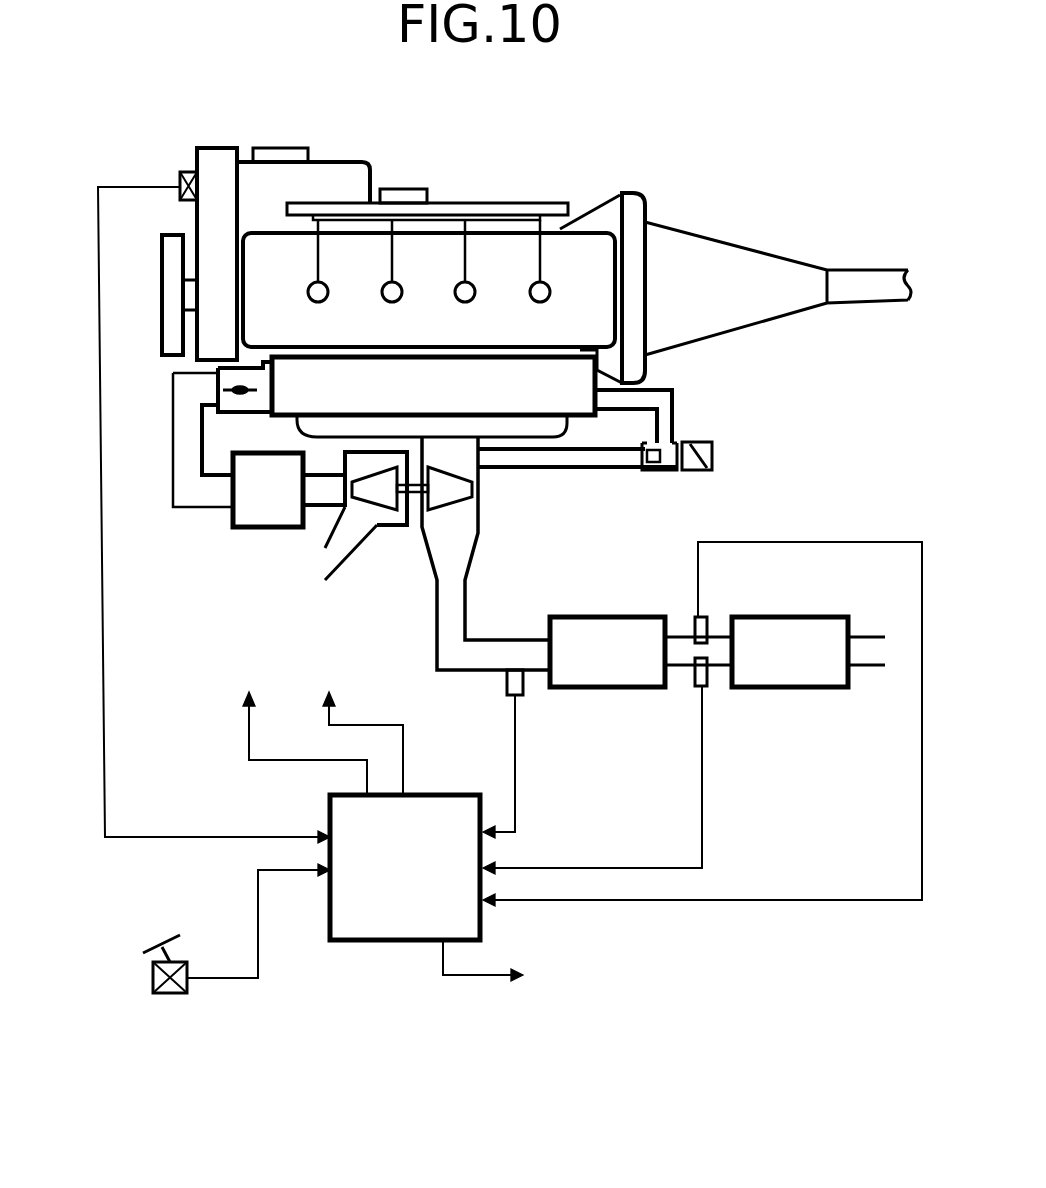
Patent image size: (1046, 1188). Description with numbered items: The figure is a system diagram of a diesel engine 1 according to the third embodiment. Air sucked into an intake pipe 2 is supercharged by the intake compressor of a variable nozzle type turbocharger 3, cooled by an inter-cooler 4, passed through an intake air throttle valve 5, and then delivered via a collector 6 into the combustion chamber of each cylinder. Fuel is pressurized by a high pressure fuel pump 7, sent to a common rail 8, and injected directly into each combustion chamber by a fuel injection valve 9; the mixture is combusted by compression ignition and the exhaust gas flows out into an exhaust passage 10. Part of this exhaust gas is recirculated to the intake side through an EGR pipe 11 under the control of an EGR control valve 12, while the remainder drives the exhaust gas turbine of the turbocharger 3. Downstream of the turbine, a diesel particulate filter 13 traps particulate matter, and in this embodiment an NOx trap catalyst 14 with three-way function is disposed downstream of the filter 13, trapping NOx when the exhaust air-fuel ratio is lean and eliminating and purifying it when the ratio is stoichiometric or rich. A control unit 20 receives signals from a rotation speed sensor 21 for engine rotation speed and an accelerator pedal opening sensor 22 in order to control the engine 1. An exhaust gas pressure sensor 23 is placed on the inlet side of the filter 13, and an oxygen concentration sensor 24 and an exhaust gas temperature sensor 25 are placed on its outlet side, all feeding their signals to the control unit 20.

The diesel engine 1 is at (587, 247).
The intake pipe 2 is at (343, 560).
The variable nozzle type turbocharger 3 is at (378, 508).
The inter-cooler 4 is at (267, 528).
The intake air throttle valve 5 is at (240, 390).
The collector 6 is at (290, 407).
The high pressure fuel pump 7 is at (335, 162).
The common rail 8 is at (470, 208).
The fuel injection valve 9 is at (325, 299).
The exhaust passage 10 is at (452, 555).
The EGR pipe 11 is at (612, 470).
The EGR control valve 12 is at (712, 452).
The diesel particulate filter 13 is at (608, 617).
The NOx trap catalyst 14 is at (787, 617).
The control unit 20 is at (397, 942).
The rotation speed sensor 21 is at (190, 172).
The accelerator pedal opening sensor 22 is at (172, 995).
The exhaust gas pressure sensor 23 is at (507, 690).
The oxygen concentration sensor 24 is at (697, 687).
The exhaust gas temperature sensor 25 is at (697, 627).